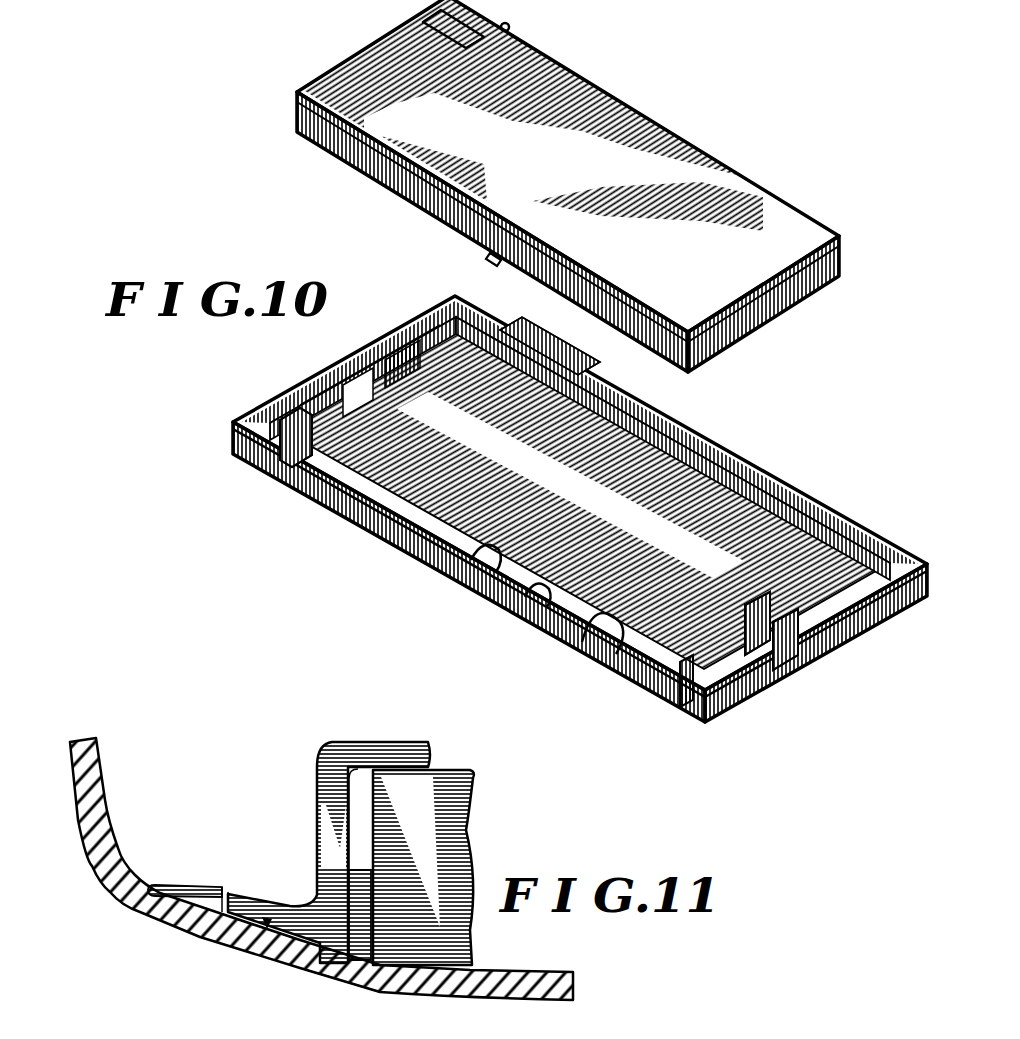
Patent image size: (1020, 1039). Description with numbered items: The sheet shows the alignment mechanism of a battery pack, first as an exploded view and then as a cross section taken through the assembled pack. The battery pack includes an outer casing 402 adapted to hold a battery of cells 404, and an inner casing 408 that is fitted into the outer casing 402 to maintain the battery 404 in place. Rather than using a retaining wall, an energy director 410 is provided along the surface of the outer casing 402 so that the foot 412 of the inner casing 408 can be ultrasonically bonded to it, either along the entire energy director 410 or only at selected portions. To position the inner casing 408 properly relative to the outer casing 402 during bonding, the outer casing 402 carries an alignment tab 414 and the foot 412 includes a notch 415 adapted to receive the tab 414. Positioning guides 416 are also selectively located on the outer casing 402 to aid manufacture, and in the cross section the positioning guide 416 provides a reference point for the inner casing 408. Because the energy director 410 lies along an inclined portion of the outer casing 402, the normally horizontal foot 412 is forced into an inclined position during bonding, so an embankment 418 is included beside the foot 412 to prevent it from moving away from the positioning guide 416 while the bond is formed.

In FIG. 10, the outer casing 402 is at (728, 533).
In FIG. 11, the outer casing 402 is at (95, 873).
In FIG. 11, the battery of cells 404 is at (442, 862).
In FIG. 10, the inner casing 408 is at (786, 228).
In FIG. 11, the inner casing 408 is at (362, 742).
In FIG. 10, the energy director 410 is at (521, 622).
In FIG. 11, the energy director 410 is at (232, 948).
In FIG. 11, the foot 412 is at (252, 890).
In FIG. 10, the alignment tab 414 is at (458, 578).
In FIG. 10, the notch 415 is at (495, 264).
In FIG. 10, the positioning guide 416 is at (619, 672).
In FIG. 11, the positioning guide 416 is at (318, 978).
In FIG. 11, the embankment 418 is at (168, 918).